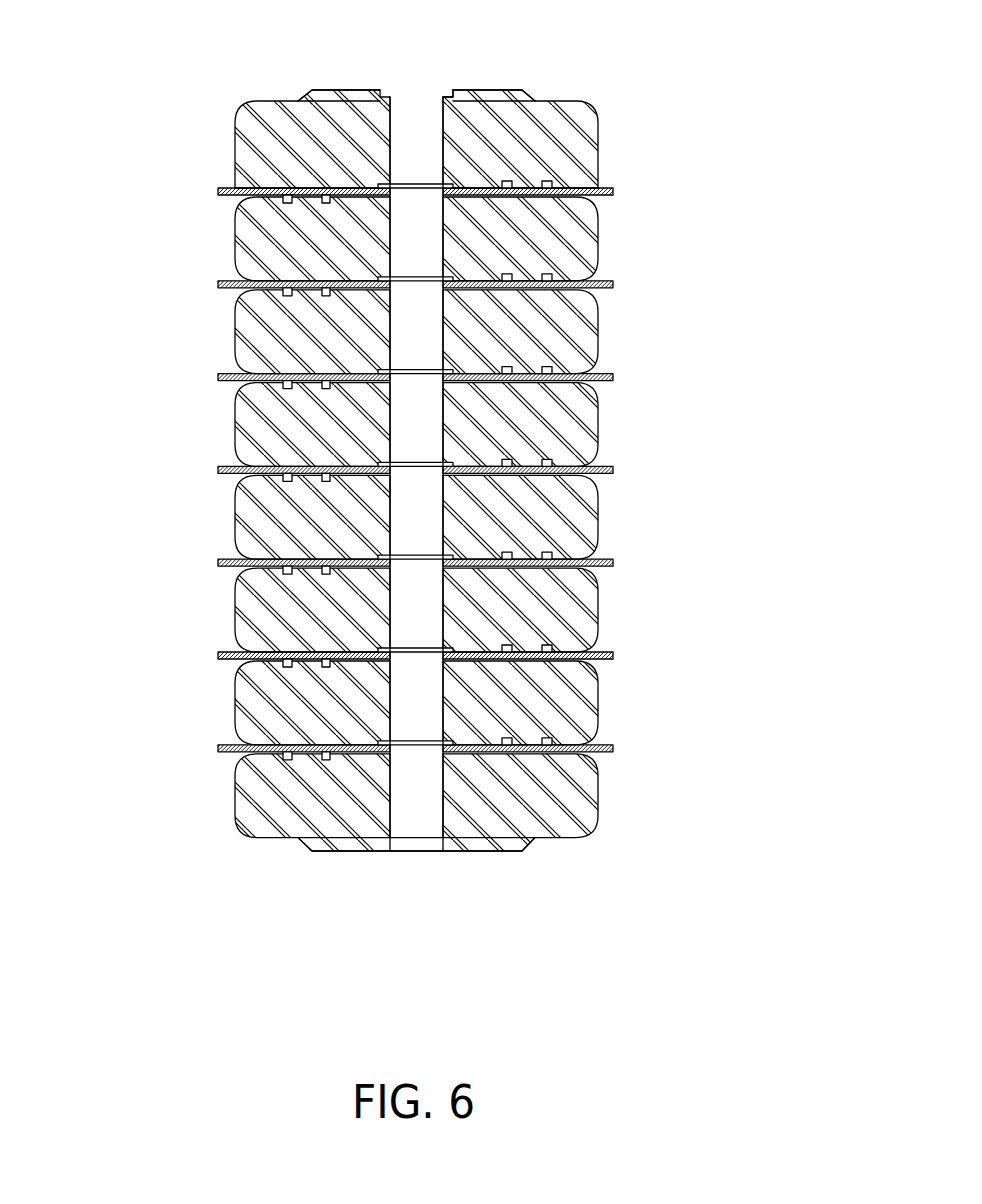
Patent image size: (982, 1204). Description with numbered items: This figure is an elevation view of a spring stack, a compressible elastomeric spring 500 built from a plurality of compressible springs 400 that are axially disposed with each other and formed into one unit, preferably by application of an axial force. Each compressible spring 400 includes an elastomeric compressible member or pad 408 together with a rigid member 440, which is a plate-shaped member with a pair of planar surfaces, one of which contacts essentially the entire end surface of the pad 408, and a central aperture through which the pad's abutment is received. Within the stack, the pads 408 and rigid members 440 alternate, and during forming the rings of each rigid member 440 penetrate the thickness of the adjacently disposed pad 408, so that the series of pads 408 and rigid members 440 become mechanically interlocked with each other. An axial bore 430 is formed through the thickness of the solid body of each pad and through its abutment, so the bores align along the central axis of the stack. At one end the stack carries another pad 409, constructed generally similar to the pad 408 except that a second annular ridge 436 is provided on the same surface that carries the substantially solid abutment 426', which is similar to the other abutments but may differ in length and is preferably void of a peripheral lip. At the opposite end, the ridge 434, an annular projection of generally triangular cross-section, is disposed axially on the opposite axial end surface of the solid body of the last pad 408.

The compressible elastomeric spring 500 is at (736, 147).
The pad 409 is at (600, 118).
The elastomeric compressible member 408 is at (215, 238).
The compressible spring 400 is at (613, 613).
The rigid member 440 is at (218, 563).
The axial bore 430 is at (390, 133).
The substantially solid abutment 426' is at (466, 51).
The second annular ridge 436 is at (501, 90).
The ridge 434 is at (302, 842).